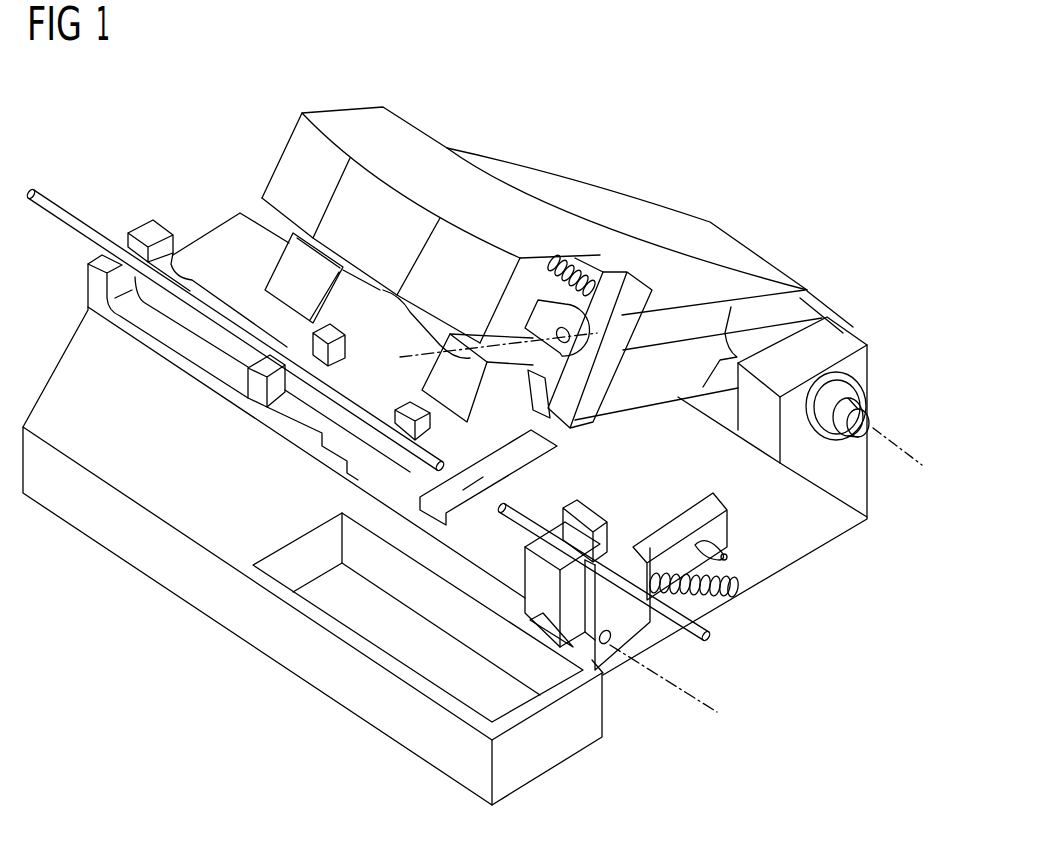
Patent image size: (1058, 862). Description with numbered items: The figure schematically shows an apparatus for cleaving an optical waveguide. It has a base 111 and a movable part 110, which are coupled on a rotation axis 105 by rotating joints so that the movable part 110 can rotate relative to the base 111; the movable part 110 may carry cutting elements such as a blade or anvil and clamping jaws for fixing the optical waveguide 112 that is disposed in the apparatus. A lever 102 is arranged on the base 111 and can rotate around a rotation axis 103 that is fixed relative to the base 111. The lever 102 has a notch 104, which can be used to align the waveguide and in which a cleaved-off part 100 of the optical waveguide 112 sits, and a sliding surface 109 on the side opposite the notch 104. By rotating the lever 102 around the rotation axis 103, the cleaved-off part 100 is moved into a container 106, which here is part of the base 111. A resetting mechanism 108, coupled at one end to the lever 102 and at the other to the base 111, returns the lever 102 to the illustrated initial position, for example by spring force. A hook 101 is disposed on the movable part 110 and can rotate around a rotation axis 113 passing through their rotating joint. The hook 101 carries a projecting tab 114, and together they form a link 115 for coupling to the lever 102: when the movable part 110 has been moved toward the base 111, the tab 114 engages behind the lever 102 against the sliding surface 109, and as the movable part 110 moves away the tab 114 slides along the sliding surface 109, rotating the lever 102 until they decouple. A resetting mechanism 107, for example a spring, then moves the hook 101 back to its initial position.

The cleaved-off part 100 is at (523, 520).
The hook 101 is at (625, 320).
The lever 102 is at (703, 532).
The rotation axis 103 is at (700, 708).
The notch 104 is at (627, 570).
The rotation axis 105 is at (882, 432).
The container 106 is at (333, 583).
The resetting mechanism 107 is at (577, 255).
The resetting mechanism 108 is at (717, 600).
The sliding surface 109 is at (727, 557).
The movable part 110 is at (412, 142).
The base 111 is at (830, 527).
The optical waveguide 112 is at (68, 217).
The rotation axis 113 is at (420, 348).
The tab 114 is at (577, 390).
The link 115 is at (748, 360).